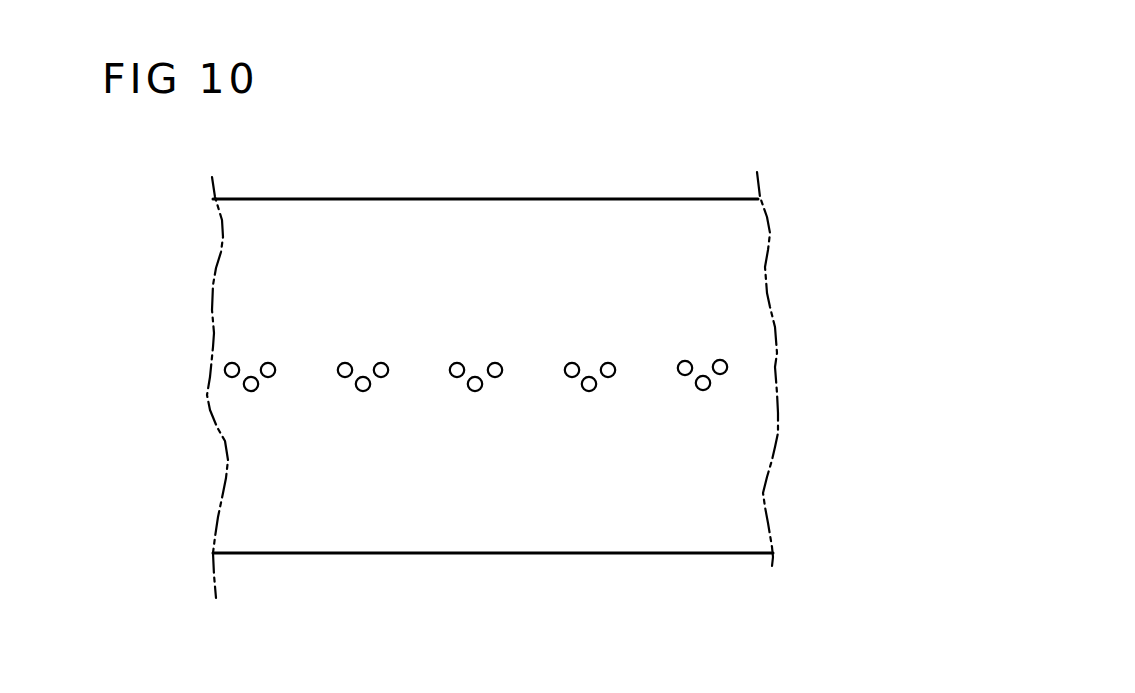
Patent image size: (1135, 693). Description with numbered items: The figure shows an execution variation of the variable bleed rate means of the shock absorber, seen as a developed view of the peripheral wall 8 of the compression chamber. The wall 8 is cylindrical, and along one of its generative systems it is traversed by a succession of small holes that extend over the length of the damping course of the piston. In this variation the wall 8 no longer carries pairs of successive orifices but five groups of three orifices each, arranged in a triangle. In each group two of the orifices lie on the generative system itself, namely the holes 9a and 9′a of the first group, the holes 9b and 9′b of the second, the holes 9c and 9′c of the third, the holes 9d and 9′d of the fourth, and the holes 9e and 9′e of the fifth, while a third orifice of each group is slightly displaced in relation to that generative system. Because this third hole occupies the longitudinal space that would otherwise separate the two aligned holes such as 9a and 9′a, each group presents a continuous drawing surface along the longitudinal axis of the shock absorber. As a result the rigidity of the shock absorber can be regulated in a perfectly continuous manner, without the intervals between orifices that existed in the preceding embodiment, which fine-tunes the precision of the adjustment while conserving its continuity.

The peripheral wall 8 is at (776, 116).
The small hole 9e is at (268, 360).
The small hole 9′e is at (229, 364).
The small hole 9d is at (381, 361).
The small hole 9′d is at (344, 361).
The small hole 9c is at (496, 361).
The small hole 9′c is at (455, 362).
The small hole 9b is at (616, 364).
The small hole 9′b is at (575, 361).
The small hole 9a is at (723, 362).
The small hole 9′a is at (684, 360).